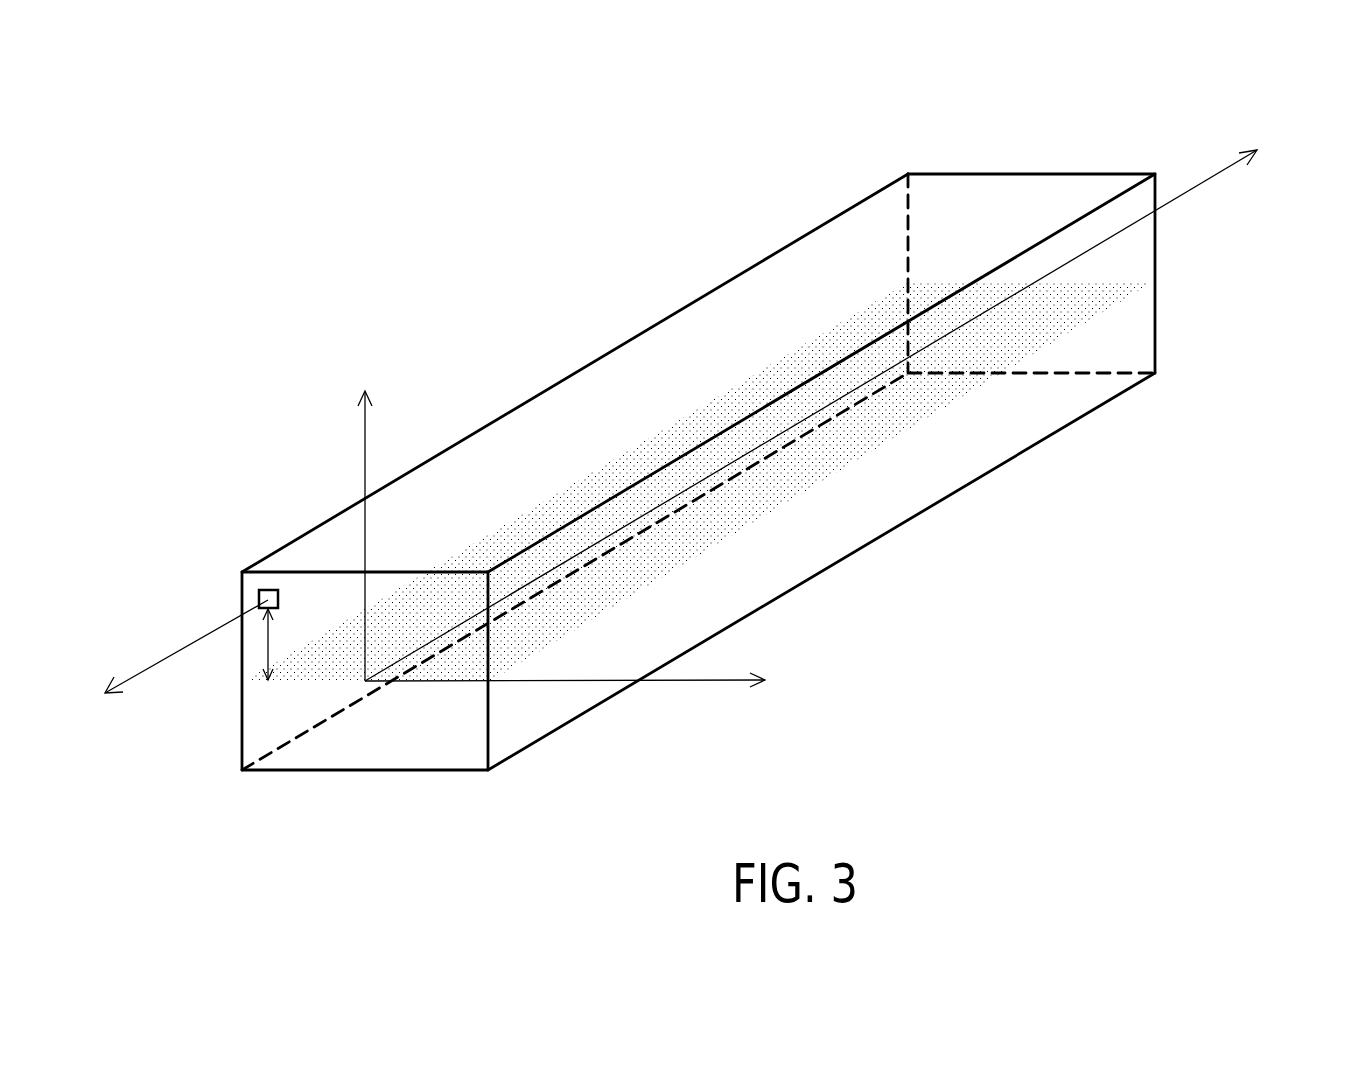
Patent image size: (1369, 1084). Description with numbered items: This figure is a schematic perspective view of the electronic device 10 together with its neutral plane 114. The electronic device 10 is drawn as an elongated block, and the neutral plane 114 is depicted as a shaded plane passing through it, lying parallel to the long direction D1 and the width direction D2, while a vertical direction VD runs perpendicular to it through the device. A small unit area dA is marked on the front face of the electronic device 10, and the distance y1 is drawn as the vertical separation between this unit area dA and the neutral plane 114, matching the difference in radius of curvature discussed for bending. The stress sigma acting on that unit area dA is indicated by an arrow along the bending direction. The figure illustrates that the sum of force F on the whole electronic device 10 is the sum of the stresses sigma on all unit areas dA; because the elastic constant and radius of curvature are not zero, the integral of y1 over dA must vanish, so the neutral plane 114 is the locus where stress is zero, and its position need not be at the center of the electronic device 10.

The electronic device 10 is at (957, 174).
The neutral plane 114 is at (1092, 297).
The vertical direction axis VD is at (364, 519).
The first direction axis D1 is at (831, 405).
The second direction axis D2 is at (585, 679).
The stress sigma is at (186, 646).
The unit area dA is at (257, 597).
The distance between segment M' and neutral plane y1 is at (280, 644).